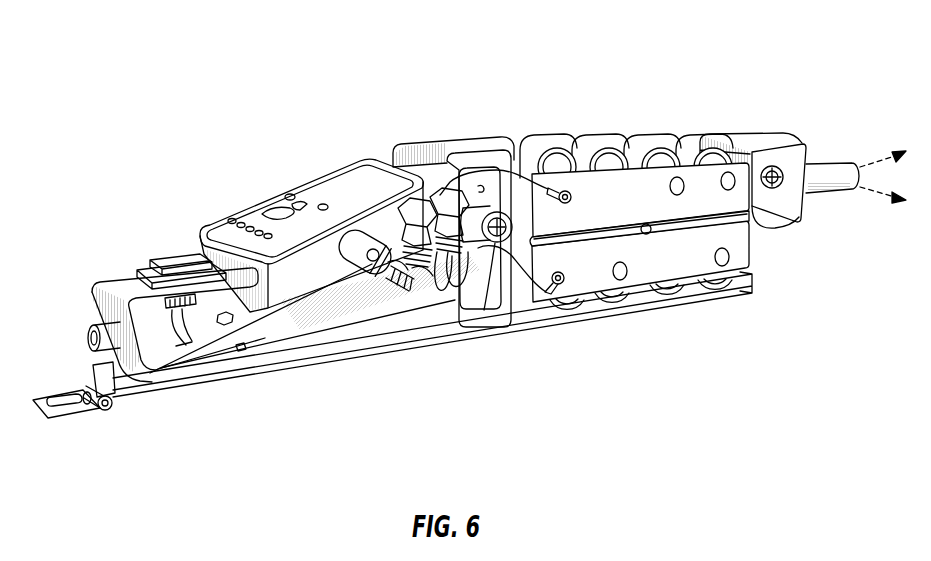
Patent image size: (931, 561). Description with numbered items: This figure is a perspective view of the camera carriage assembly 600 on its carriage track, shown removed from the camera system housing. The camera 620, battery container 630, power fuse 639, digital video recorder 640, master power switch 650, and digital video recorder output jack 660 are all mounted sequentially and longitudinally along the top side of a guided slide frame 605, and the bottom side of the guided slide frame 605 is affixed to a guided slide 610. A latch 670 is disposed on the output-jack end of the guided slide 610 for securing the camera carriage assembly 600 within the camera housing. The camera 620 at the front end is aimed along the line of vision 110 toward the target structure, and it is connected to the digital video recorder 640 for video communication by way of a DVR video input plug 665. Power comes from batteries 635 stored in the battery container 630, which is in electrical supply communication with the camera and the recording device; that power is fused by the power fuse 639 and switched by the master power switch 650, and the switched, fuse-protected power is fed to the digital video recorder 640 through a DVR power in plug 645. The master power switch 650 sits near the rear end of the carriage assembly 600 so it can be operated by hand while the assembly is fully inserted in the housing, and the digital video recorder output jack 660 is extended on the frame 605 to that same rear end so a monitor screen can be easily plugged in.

The camera carriage assembly 600 is at (333, 60).
The guided slide frame 605 is at (107, 283).
The guided slide 610 is at (249, 371).
The camera 620 is at (823, 192).
The battery container 630 is at (648, 283).
The batteries 635 is at (556, 143).
The power fuse 639 is at (492, 233).
The digital video recorder 640 is at (279, 201).
The DVR power in plug 645 is at (372, 259).
The master power switch 650 is at (167, 257).
The digital video recorder output jack 660 is at (95, 328).
The DVR video input plug 665 is at (447, 273).
The latch 670 is at (60, 407).
The line of vision 110 is at (880, 153).